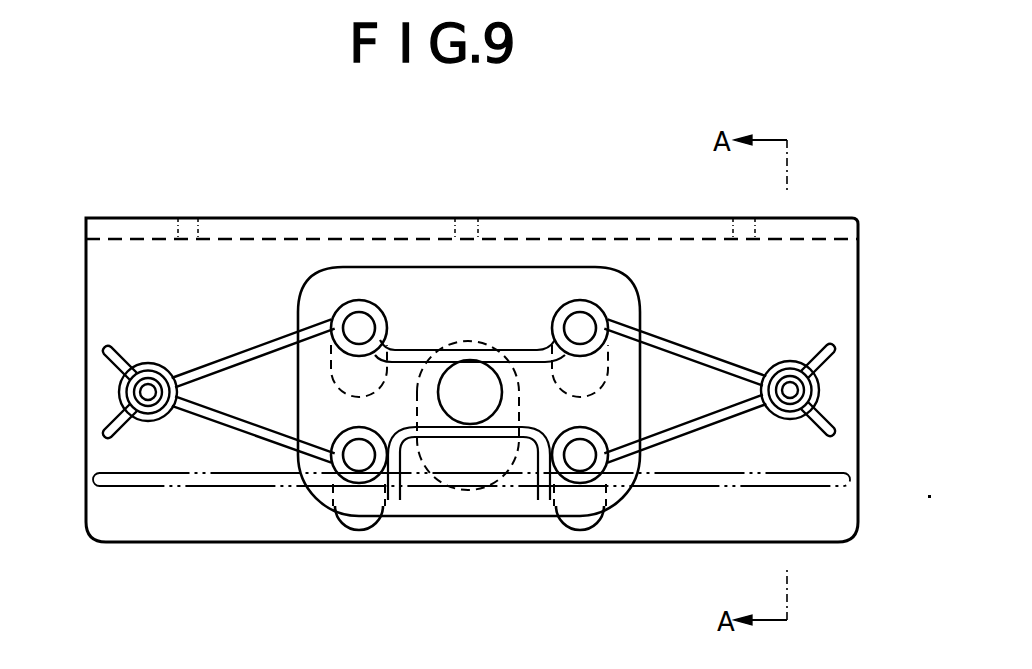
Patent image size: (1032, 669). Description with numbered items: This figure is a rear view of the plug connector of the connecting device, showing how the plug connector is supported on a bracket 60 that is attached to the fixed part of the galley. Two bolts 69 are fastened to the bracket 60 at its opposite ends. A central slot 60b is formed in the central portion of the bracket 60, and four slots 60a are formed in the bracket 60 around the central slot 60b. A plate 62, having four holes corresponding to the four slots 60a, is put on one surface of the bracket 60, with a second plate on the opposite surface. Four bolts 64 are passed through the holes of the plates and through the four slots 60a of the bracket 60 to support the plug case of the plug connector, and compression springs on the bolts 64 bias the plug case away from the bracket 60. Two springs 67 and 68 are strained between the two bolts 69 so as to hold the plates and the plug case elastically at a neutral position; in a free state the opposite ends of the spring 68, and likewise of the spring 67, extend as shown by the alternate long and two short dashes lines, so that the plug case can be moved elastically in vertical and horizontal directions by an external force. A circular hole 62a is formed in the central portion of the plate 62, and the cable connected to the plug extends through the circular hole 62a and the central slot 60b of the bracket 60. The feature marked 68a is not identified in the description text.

The bracket 60 is at (287, 226).
The slots 60a is at (382, 368).
The central slot 60b is at (512, 482).
The plate 62 is at (509, 285).
The circular hole 62a is at (472, 405).
The bolts 64 is at (357, 330).
The spring 67 is at (253, 348).
The spring 68 is at (373, 478).
The slot 68a is at (203, 488).
The bolts 69 is at (125, 399).